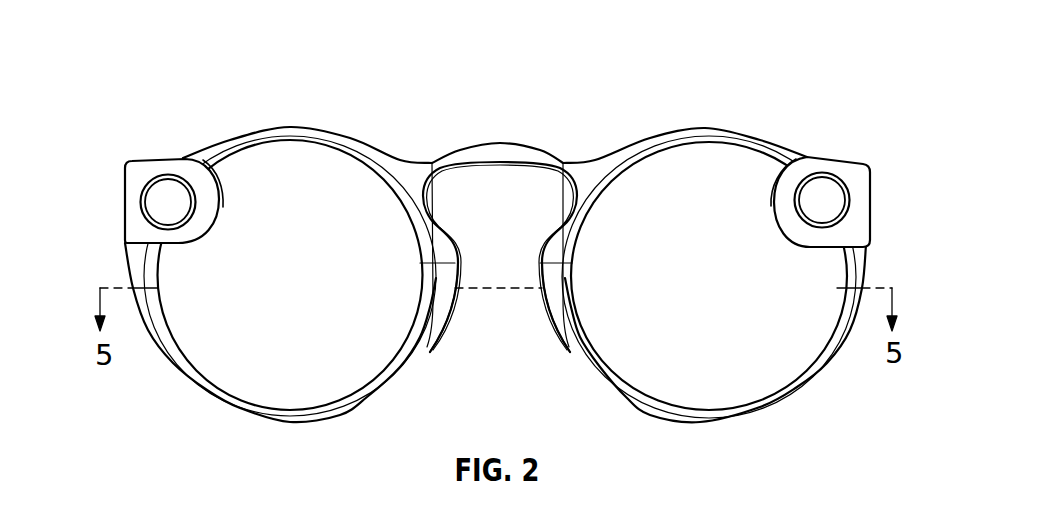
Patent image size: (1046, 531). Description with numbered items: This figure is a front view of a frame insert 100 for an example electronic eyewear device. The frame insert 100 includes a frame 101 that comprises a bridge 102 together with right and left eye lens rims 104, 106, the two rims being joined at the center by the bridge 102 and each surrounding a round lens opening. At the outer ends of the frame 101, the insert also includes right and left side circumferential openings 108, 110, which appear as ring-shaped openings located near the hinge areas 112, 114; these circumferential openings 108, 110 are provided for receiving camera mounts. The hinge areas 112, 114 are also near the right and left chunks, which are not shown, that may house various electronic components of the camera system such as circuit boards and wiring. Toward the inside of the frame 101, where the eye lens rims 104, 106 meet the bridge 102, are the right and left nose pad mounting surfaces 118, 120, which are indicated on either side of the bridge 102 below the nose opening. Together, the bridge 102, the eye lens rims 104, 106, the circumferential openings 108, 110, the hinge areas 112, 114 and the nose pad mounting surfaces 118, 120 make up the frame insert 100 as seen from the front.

The frame insert 100 is at (638, 47).
The frame 101 is at (463, 118).
The bridge 102 is at (523, 145).
The right eye lens rim 104 is at (270, 137).
The left eye lens rim 106 is at (738, 145).
The right side circumferential opening 108 is at (850, 203).
The left side circumferential opening 110 is at (135, 178).
The hinge area 112 is at (112, 232).
The hinge area 114 is at (888, 263).
The right nose pad mounting surface 118 is at (445, 272).
The left nose pad mounting surface 120 is at (547, 272).